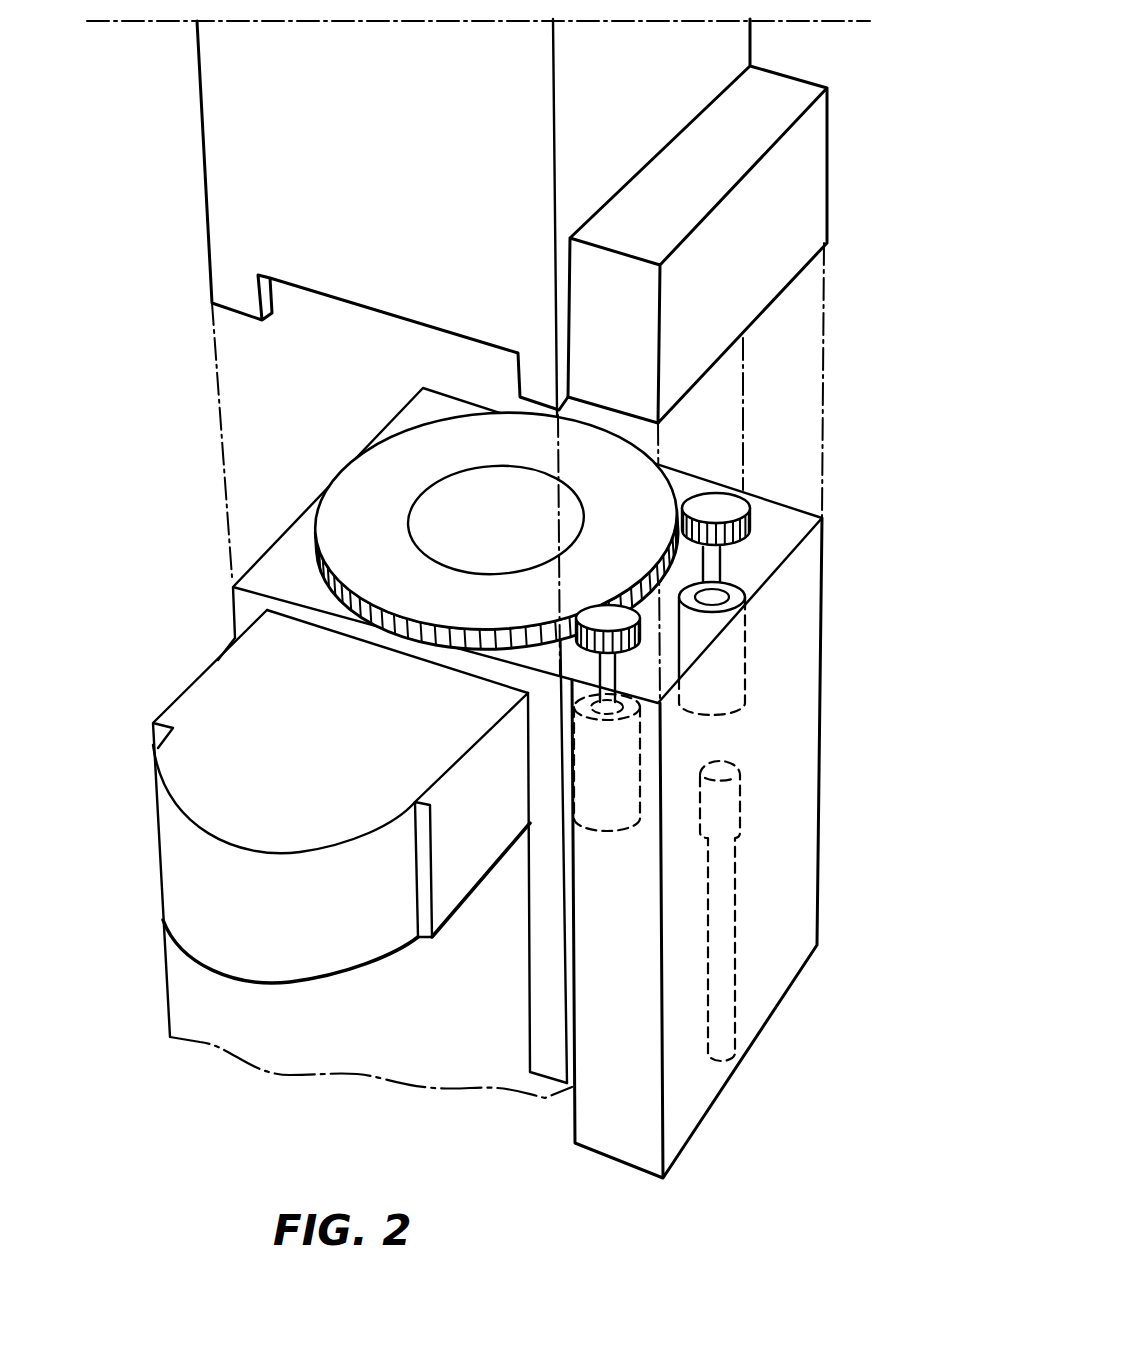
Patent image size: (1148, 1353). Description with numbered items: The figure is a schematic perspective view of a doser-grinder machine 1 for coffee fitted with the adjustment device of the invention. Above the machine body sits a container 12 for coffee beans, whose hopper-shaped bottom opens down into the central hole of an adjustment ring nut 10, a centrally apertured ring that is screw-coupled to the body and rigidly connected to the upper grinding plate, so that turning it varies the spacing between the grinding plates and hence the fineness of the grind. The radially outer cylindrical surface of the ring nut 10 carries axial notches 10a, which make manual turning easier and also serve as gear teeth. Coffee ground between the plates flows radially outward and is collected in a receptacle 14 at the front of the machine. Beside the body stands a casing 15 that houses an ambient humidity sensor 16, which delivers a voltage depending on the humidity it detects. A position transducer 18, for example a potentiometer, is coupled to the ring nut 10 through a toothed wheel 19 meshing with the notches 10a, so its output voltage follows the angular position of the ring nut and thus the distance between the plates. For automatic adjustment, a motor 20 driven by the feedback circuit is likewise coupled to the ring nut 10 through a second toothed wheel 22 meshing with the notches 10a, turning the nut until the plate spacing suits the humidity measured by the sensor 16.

The doser-grinder machine 1 is at (841, 411).
The adjustment ring nut 10 is at (412, 536).
The axial notches 10a is at (323, 582).
The container 12 is at (222, 191).
The receptacle 14 is at (203, 912).
The casing 15 is at (836, 897).
The ambient humidity sensor 16 is at (720, 885).
The position transducer 18 is at (705, 630).
The toothed wheel 19 is at (725, 510).
The motor 20 is at (612, 795).
The toothed wheel 22 is at (609, 618).